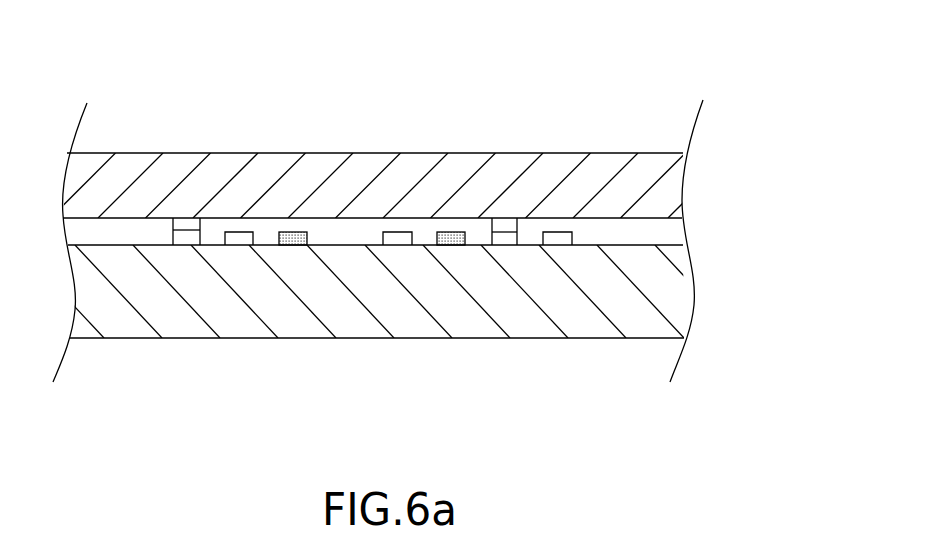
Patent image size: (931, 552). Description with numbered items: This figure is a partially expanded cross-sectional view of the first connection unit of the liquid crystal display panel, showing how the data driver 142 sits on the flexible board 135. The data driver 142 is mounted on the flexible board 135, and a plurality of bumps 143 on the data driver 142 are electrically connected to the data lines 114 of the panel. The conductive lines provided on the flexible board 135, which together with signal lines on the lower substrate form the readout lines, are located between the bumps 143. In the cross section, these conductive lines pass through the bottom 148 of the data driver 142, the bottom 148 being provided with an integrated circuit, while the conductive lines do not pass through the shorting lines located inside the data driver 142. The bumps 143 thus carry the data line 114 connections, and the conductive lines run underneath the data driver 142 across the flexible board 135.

The data driver 142 is at (633, 173).
The flexible board 135 is at (633, 295).
The bumps 143 is at (178, 226).
The bottom 148 is at (262, 218).
The data lines 114 is at (400, 245).